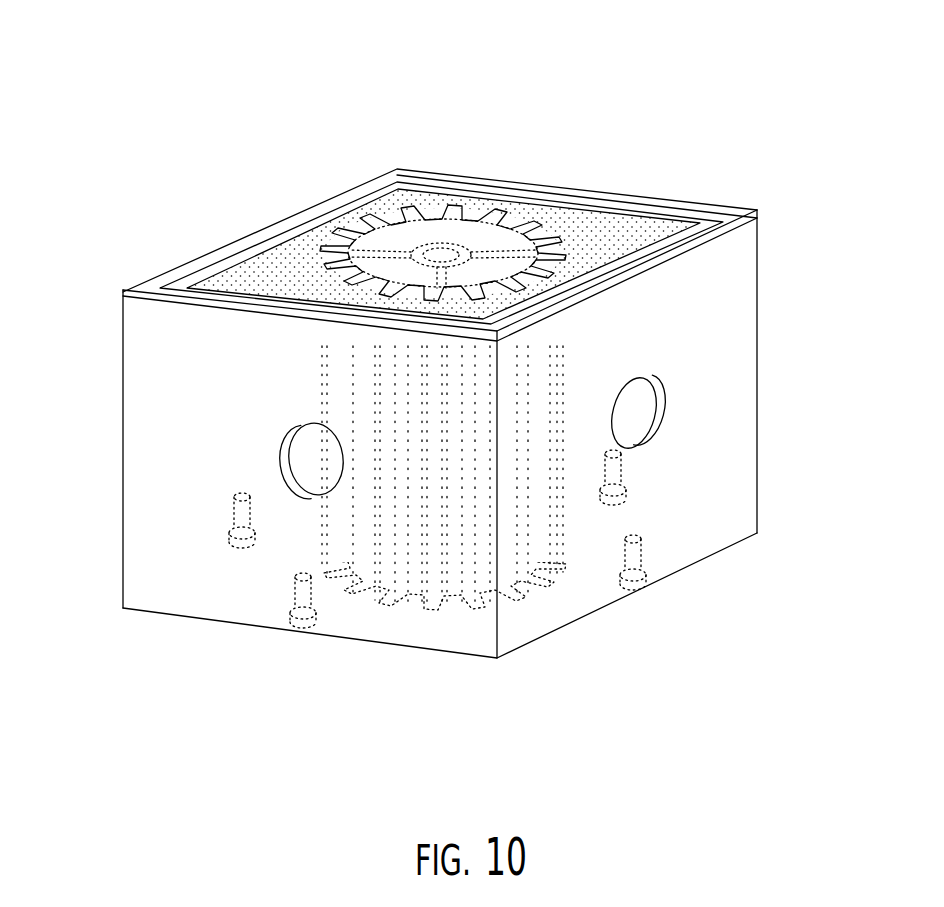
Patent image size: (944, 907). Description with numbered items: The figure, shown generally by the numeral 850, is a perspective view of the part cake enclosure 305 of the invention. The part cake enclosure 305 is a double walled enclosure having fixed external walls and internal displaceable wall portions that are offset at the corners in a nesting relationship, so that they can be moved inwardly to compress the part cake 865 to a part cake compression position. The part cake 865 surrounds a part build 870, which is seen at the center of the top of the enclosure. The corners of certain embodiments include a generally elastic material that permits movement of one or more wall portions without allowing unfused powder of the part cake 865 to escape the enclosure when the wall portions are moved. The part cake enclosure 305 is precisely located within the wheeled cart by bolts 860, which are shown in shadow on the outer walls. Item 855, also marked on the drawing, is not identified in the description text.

The part cake enclosure view 850 is at (150, 122).
The part cake enclosure 305 is at (767, 285).
The cover plate 855 is at (190, 263).
The bolts 860 is at (620, 488).
The part cake 865 is at (300, 255).
The part build 870 is at (365, 225).